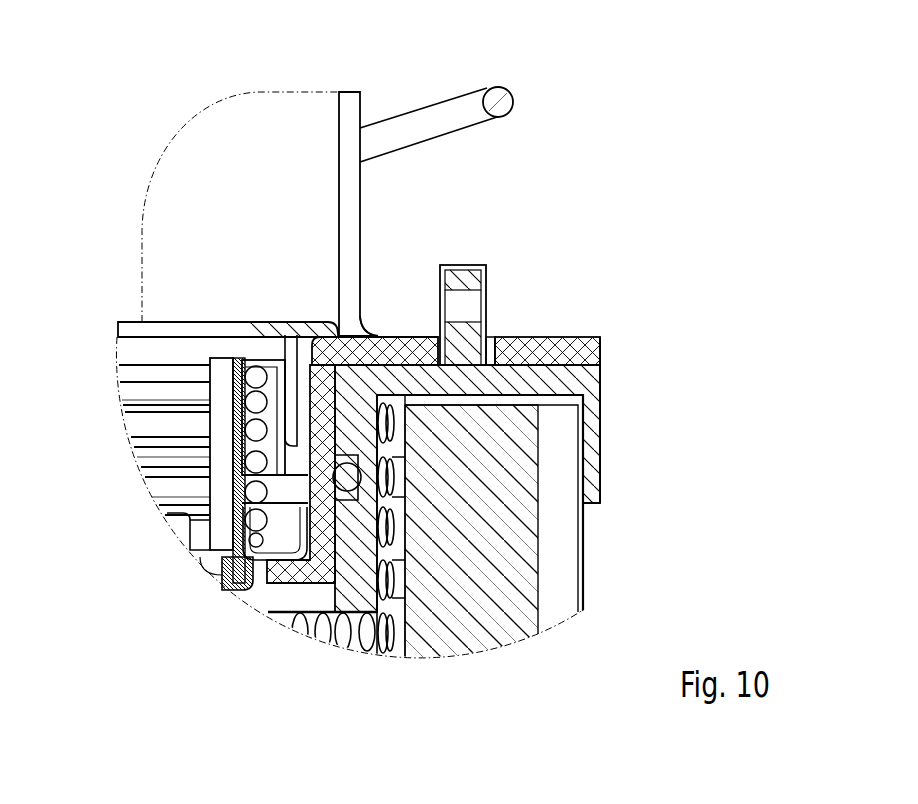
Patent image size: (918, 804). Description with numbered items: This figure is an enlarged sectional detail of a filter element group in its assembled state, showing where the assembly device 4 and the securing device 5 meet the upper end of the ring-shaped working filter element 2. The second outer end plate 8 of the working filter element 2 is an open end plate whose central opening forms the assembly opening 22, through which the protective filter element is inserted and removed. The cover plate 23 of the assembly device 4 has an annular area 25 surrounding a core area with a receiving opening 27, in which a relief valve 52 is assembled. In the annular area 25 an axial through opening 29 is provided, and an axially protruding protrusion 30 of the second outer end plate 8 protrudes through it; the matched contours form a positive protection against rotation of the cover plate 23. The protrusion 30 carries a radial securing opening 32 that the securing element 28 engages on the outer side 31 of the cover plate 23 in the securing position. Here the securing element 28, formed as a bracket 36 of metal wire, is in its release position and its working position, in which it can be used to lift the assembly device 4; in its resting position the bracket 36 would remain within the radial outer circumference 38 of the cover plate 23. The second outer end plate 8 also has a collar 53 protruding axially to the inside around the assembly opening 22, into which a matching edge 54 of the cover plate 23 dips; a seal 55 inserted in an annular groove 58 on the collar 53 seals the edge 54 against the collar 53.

The working filter element 2 is at (586, 560).
The assembly device 4 is at (609, 344).
The securing device 5 is at (443, 143).
The second outer end plate 8 is at (602, 388).
The assembly opening 22 is at (330, 597).
The cover plate 23 is at (568, 330).
The annular area 25 is at (410, 337).
The receiving opening 27 is at (320, 360).
The securing element 28 is at (503, 87).
The through opening 29 is at (490, 347).
The protrusion 30 is at (461, 270).
The outer side 31 is at (388, 330).
The securing opening 32 is at (473, 310).
The bracket 36 is at (428, 117).
The radial outer circumference 38 is at (610, 426).
The relief valve 52 is at (168, 352).
The collar 53 is at (348, 590).
The edge 54 is at (312, 424).
The seal 55 is at (347, 477).
The annular groove 58 is at (332, 473).